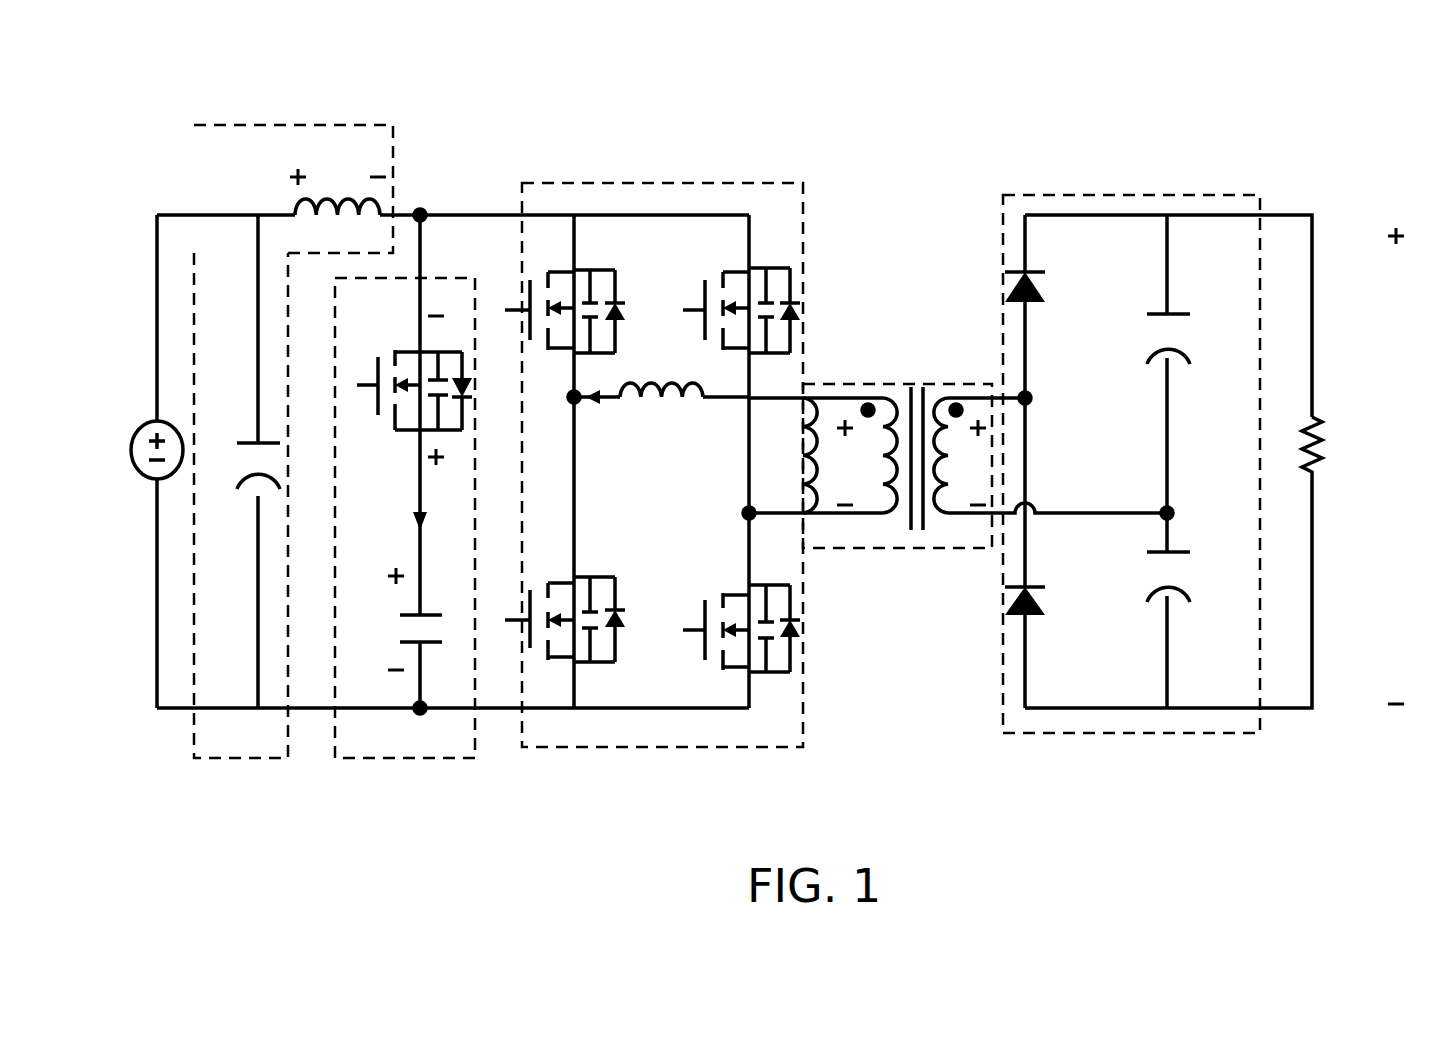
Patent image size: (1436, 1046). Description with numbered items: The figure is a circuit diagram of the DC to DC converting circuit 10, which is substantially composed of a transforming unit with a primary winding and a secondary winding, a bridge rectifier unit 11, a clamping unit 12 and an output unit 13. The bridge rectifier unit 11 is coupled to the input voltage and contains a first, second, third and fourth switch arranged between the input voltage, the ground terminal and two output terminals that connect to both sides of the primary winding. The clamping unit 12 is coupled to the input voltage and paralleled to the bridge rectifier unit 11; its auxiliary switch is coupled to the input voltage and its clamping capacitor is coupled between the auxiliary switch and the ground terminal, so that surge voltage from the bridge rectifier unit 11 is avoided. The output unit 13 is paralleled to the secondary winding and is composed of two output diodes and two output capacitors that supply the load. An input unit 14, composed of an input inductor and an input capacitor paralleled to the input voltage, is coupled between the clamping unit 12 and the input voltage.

The DC to DC converting circuit 10 is at (1082, 800).
The bridge rectifier unit 11 is at (692, 184).
The clamping unit 12 is at (413, 760).
The output unit 13 is at (1180, 197).
The input unit 14 is at (340, 126).